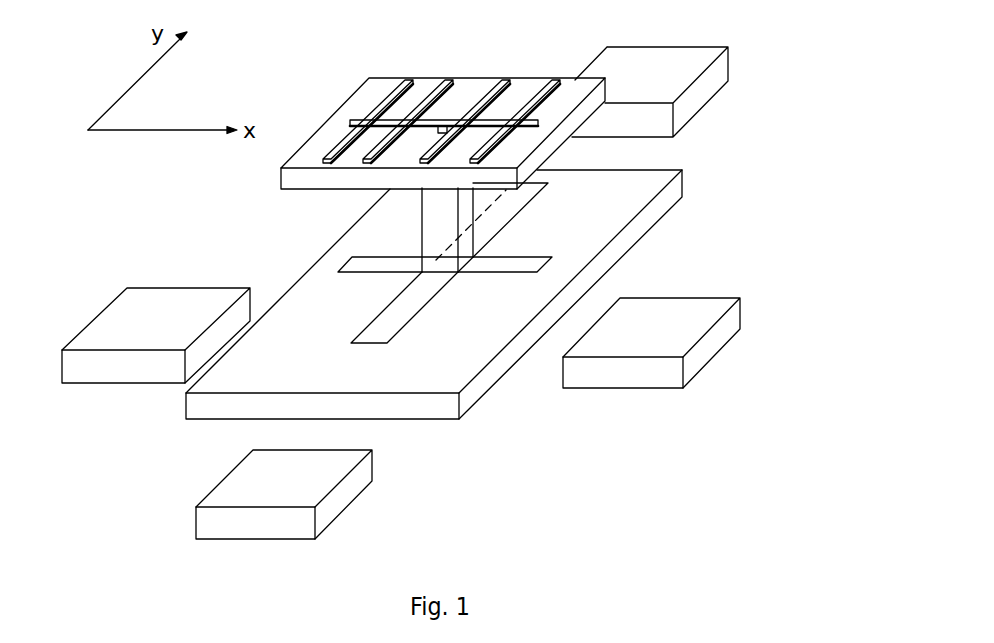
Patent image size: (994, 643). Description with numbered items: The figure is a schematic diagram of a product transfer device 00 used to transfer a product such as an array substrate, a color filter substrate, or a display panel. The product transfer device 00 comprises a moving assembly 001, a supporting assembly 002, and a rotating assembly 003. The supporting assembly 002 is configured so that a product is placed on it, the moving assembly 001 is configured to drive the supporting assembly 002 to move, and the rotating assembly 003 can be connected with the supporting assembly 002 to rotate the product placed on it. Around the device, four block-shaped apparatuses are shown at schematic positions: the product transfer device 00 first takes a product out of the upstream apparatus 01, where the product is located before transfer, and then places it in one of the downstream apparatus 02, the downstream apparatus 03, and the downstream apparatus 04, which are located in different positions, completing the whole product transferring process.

The product transfer device 00 is at (534, 248).
The moving assembly 001 is at (524, 263).
The supporting assembly 002 is at (547, 150).
The rotating assembly 003 is at (545, 122).
The upstream apparatus 01 is at (185, 301).
The downstream apparatus 02 is at (654, 335).
The downstream apparatus 03 is at (641, 90).
The downstream apparatus 04 is at (286, 485).